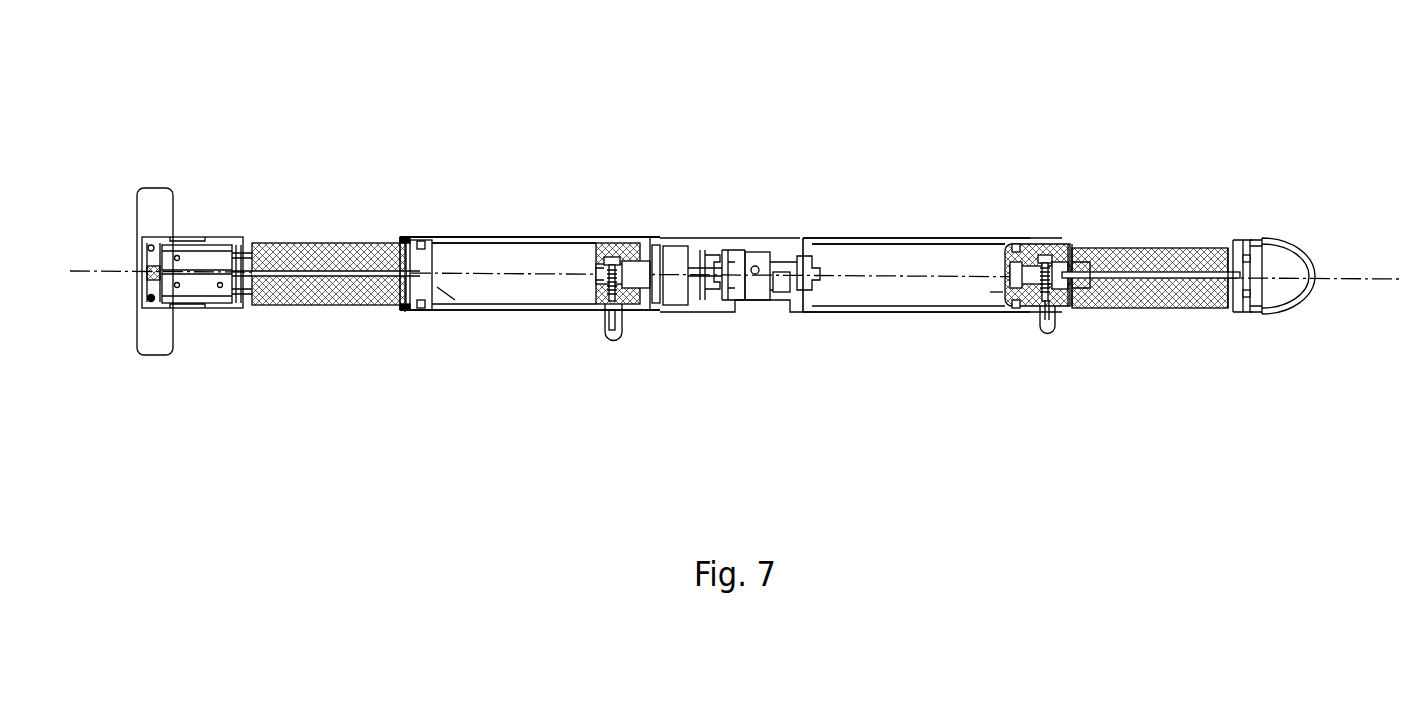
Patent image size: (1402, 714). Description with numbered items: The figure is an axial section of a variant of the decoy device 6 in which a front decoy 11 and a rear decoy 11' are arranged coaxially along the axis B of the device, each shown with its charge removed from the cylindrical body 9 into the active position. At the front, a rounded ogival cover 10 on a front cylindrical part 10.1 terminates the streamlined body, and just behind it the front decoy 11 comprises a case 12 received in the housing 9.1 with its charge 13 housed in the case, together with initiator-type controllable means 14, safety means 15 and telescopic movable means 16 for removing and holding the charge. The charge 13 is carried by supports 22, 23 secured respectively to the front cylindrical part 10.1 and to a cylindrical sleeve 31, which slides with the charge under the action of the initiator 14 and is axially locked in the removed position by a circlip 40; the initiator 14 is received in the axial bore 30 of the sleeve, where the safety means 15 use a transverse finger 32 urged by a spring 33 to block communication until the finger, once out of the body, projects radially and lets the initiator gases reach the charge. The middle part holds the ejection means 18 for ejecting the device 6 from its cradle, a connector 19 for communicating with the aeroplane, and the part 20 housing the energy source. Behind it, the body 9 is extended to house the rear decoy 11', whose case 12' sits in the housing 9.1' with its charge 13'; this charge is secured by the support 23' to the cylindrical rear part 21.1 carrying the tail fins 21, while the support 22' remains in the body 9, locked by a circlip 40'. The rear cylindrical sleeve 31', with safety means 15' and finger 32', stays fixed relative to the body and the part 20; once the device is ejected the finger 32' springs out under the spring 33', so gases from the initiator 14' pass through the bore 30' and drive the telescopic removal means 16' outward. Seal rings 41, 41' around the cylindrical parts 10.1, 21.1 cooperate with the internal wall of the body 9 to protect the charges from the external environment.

The decoy device 6 is at (730, 165).
The cylindrical body 9 is at (838, 240).
The housing 9.1 is at (908, 267).
The housing 9.1' is at (514, 266).
The rounded cover 10 is at (1302, 240).
The front cylindrical part 10.1 is at (1250, 240).
The decoy 11 is at (1087, 197).
The rear decoy 11' is at (513, 218).
The case 12 is at (916, 219).
The case 12' is at (530, 218).
The charge 13 is at (1151, 217).
The charge 13' is at (326, 216).
The initiator-type controllable means 14 is at (787, 208).
The initiator 14' is at (661, 207).
The safety means 15 is at (1067, 371).
The safety means 15' is at (592, 360).
The movable means for removing and holding the charge 16 is at (936, 350).
The telescopic removal means 16' is at (465, 351).
The ejection means 18 is at (749, 328).
The connector 19 is at (782, 328).
The energy source 20 is at (694, 328).
The tail fins 21 is at (170, 315).
The cylindrical rear part 21.1 is at (222, 240).
The transverse support 22 is at (1111, 339).
The support 22' is at (386, 326).
The support 23 is at (1203, 332).
The support 23' is at (272, 330).
The axial bore 30 is at (1001, 216).
The bore 30' is at (579, 215).
The cylindrical sleeve 31 is at (1013, 217).
The cylindrical sleeve 31' is at (602, 214).
The transverse finger 32 is at (1033, 330).
The safety finger 32' is at (627, 363).
The spring 33 is at (1057, 214).
The spring 33' is at (559, 342).
The circlip 40 is at (979, 339).
The circlip 40' is at (415, 328).
The seal ring 41 is at (1254, 328).
The seal ring 41' is at (209, 330).
The axis B is at (1360, 300).